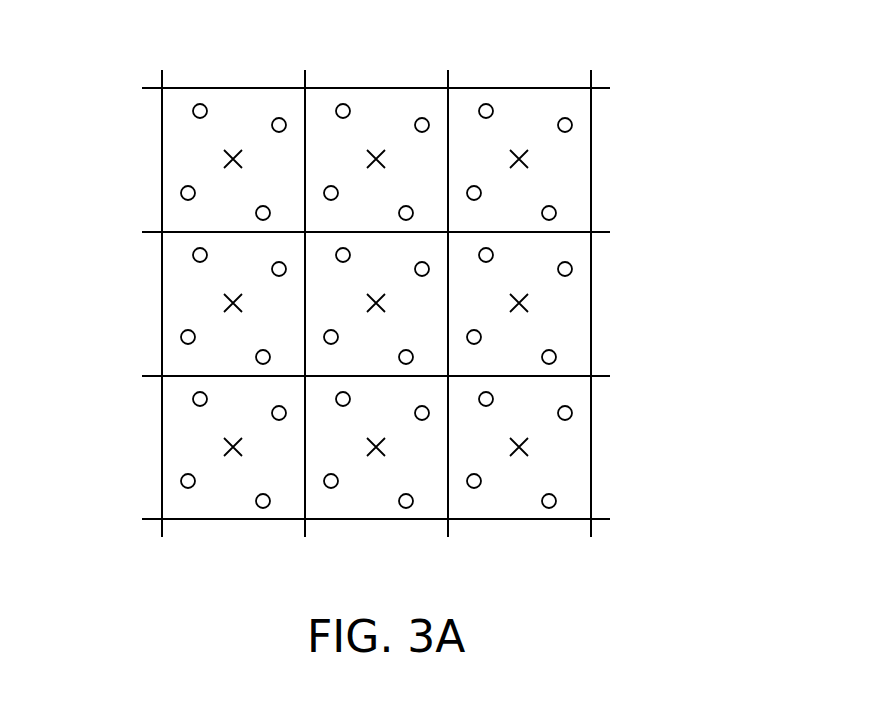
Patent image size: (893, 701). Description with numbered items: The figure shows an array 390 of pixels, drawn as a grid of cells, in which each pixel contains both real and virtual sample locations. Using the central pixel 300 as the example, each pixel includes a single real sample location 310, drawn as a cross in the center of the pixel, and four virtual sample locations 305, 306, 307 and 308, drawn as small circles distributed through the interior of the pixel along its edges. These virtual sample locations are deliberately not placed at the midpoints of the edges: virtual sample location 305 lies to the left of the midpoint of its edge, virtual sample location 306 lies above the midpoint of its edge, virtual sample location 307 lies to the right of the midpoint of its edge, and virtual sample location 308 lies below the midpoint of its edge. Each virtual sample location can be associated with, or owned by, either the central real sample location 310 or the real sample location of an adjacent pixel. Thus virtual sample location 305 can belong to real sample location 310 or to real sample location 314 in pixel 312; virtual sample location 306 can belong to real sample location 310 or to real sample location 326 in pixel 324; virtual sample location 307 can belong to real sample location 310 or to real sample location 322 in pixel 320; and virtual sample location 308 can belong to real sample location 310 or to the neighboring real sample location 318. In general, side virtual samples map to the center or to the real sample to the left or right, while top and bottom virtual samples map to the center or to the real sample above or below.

The pixel 300 is at (350, 305).
The virtual sample location 305 is at (339, 250).
The virtual sample location 306 is at (426, 257).
The virtual sample location 307 is at (412, 347).
The virtual sample location 308 is at (326, 343).
The real sample location 310 is at (377, 294).
The pixel 312 is at (350, 160).
The real sample location 314 is at (375, 150).
The real sample location 318 is at (229, 300).
The pixel 320 is at (401, 406).
The real sample location 322 is at (376, 456).
The pixel 324 is at (495, 306).
The real sample location 326 is at (524, 298).
The array 390 is at (738, 108).